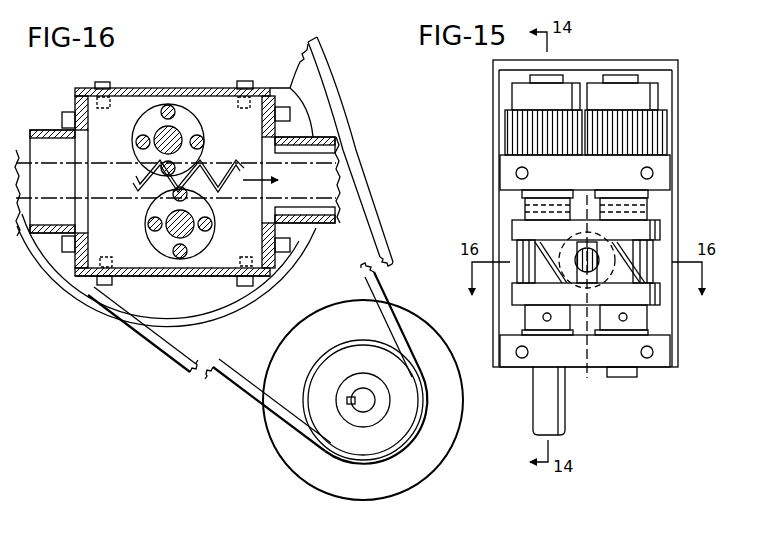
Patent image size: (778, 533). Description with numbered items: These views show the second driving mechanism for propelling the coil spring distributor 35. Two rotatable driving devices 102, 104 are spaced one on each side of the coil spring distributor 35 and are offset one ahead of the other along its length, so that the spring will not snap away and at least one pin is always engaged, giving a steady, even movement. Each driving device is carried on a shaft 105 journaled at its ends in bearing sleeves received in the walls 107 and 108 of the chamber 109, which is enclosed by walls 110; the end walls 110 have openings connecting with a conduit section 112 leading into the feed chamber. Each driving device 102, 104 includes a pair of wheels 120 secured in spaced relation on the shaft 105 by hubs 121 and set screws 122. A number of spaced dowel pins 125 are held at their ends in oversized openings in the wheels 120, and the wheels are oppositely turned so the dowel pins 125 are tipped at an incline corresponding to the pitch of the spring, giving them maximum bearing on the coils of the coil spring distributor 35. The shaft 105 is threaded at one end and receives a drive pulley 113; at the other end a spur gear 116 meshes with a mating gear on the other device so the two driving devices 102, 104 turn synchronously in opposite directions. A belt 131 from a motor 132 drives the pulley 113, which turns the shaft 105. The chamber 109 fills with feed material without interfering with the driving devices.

In FIG. 16, the coil spring distributor 35 is at (217, 167).
In FIG. 15, the coil spring distributor 35 is at (623, 377).
In FIG. 16, the rotatable driving device 102 is at (153, 248).
In FIG. 15, the rotatable driving device 102 is at (512, 230).
In FIG. 16, the rotatable driving device 104 is at (147, 107).
In FIG. 15, the rotatable driving device 104 is at (660, 242).
In FIG. 16, the shaft 105 is at (153, 137).
In FIG. 15, the shaft 105 is at (555, 400).
In FIG. 15, the wall 107 is at (500, 167).
In FIG. 16, the wall 108 is at (273, 255).
In FIG. 15, the wall 108 is at (665, 353).
In FIG. 16, the chamber 109 is at (221, 106).
In FIG. 15, the chamber 109 is at (660, 100).
In FIG. 16, the walls 110 is at (82, 102).
In FIG. 15, the walls 110 is at (500, 87).
In FIG. 16, the conduit section 112 is at (40, 130).
In FIG. 16, the drive pulley 113 is at (330, 90).
In FIG. 15, the spur gear 116 is at (508, 127).
In FIG. 16, the wheels 120 is at (199, 102).
In FIG. 15, the wheels 120 is at (515, 297).
In FIG. 15, the hub 121 is at (643, 208).
In FIG. 15, the set screw 122 is at (547, 321).
In FIG. 16, the dowel pins 125 is at (197, 140).
In FIG. 16, the belt 131 is at (218, 375).
In FIG. 16, the motor 132 is at (447, 432).